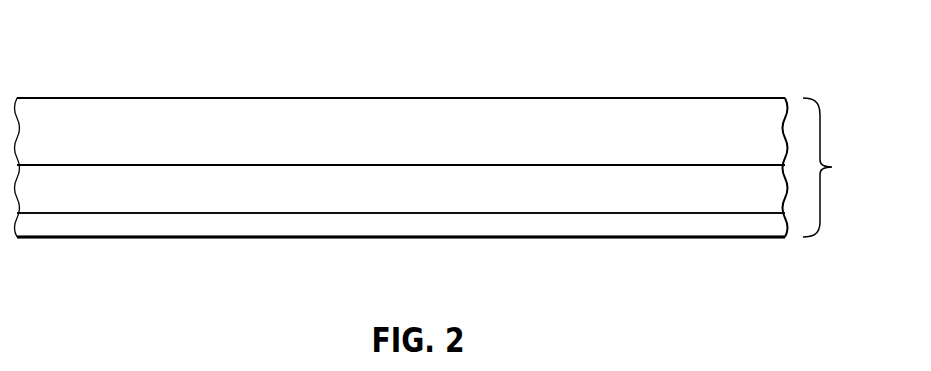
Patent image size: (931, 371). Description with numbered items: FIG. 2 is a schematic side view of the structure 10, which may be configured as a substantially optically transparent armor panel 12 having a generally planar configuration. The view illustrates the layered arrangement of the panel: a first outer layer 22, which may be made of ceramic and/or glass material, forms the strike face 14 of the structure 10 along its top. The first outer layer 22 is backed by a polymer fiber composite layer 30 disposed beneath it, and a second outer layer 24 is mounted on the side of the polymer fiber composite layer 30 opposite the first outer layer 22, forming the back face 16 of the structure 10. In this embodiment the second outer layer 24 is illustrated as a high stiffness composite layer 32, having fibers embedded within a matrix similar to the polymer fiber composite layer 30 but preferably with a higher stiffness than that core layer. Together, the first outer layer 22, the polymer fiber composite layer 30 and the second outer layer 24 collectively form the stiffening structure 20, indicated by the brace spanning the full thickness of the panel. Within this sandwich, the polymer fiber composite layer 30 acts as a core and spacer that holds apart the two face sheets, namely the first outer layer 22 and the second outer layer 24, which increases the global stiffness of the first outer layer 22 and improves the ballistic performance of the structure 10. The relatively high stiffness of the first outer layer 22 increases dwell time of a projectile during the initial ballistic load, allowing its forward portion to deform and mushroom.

The structure 10 is at (86, 98).
The substantially optically transparent armor panel 12 is at (421, 113).
The strike face 14 is at (553, 113).
The back face 16 is at (540, 237).
The stiffening structure 20 is at (443, 167).
The first outer layer 22 is at (732, 118).
The second outer layer 24 is at (658, 227).
The polymer fiber composite layer 30 is at (744, 193).
The high stiffness composite layer 32 is at (253, 237).